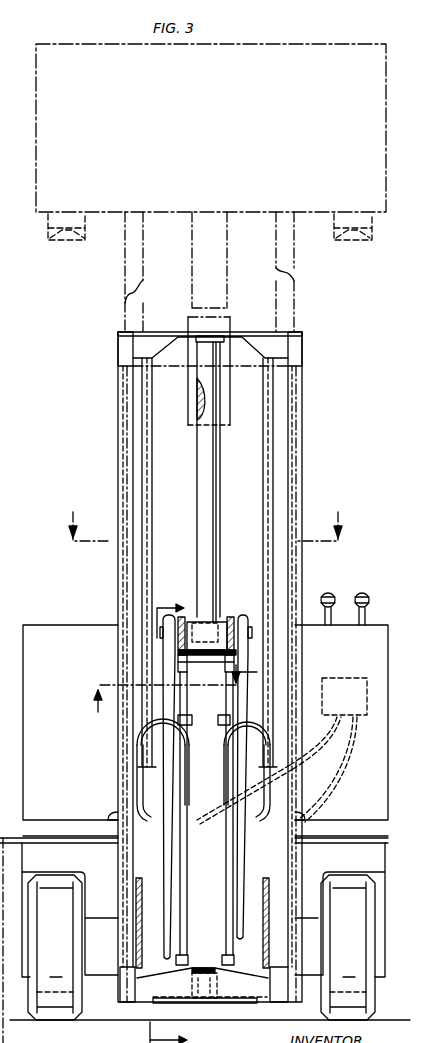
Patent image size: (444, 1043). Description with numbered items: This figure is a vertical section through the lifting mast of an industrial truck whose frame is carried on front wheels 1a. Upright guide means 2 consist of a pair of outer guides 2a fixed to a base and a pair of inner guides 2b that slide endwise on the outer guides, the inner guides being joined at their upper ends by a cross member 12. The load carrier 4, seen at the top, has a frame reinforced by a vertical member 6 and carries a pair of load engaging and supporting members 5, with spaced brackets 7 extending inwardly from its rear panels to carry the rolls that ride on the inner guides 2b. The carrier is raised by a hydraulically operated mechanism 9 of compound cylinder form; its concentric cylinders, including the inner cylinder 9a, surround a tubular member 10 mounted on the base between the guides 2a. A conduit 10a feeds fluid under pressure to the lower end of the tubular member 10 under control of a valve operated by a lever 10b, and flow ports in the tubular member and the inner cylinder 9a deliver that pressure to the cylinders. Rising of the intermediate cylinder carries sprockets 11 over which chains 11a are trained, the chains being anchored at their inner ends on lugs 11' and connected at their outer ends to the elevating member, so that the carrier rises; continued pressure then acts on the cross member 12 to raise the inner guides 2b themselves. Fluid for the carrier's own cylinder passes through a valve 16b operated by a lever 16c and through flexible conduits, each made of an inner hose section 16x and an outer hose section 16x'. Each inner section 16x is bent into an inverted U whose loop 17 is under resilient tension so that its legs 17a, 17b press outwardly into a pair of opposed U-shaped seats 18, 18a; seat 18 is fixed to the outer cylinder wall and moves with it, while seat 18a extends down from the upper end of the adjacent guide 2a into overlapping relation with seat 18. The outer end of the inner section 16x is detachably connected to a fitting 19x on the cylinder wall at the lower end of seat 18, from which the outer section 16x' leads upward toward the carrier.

The front wheels 1a is at (352, 866).
The upright guide means 2 is at (318, 461).
The outer guides 2a is at (130, 560).
The inner guides 2b is at (296, 293).
The load carrier 4 is at (46, 177).
The load engaging and supporting member 5 is at (172, 703).
The vertical member 6 is at (175, 814).
The brackets 7 is at (141, 880).
The hydraulically operated mechanism 9 is at (241, 544).
The inner cylinder 9a is at (210, 497).
The tubular member 10 is at (205, 393).
The conduit 10a is at (238, 1002).
The lever 10b is at (328, 593).
The sprockets 11 is at (211, 626).
The lugs 11' is at (204, 710).
The chains 11a is at (182, 660).
The cross member 12 is at (252, 331).
The valve 16b is at (340, 678).
The lever 16c is at (362, 593).
The inner hose section 16x is at (283, 770).
The outer hose section 16x' is at (173, 759).
The loop 17 is at (240, 720).
The hose leg 17a is at (178, 777).
The hose leg 17b is at (142, 770).
The seat 18 is at (232, 790).
The seat 18a is at (147, 518).
The fitting 19x is at (190, 960).